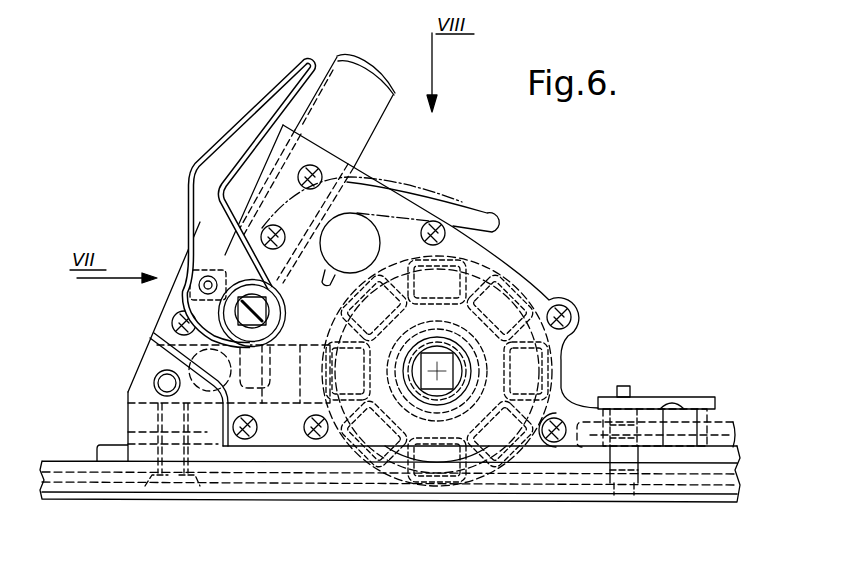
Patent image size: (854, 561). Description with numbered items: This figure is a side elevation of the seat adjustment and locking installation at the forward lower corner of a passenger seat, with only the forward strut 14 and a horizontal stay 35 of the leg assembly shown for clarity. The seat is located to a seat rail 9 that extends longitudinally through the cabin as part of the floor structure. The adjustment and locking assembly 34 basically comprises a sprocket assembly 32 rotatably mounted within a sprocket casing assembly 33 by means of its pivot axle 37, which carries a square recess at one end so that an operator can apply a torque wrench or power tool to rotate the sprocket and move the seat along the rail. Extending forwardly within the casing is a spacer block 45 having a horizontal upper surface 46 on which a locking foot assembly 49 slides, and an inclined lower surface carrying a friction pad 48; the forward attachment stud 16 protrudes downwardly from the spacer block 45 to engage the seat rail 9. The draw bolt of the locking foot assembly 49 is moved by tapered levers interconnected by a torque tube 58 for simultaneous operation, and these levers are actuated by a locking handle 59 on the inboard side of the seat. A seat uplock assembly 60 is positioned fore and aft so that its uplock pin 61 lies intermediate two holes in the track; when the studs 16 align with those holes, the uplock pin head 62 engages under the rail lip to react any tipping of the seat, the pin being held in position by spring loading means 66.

The seat rail 9 is at (65, 462).
The forward strut 14 is at (338, 84).
The attachment stud 16 is at (148, 480).
The sprocket assembly 32 is at (478, 270).
The sprocket casing assembly 33 is at (480, 214).
The adjustment and locking assembly 34 is at (410, 229).
The horizontal stay 35 is at (727, 422).
The pivot axle 37 is at (453, 367).
The spacer block 45 is at (133, 407).
The horizontal upper surface 46 is at (276, 404).
The friction pad 48 is at (140, 431).
The locking foot assembly 49 is at (140, 368).
The torque tube 58 is at (210, 272).
The locking handle 59 is at (258, 110).
The seat uplock assembly 60 is at (623, 406).
The uplock pin 61 is at (615, 393).
The uplock pin head 62 is at (626, 503).
The spring loading means 66 is at (624, 448).